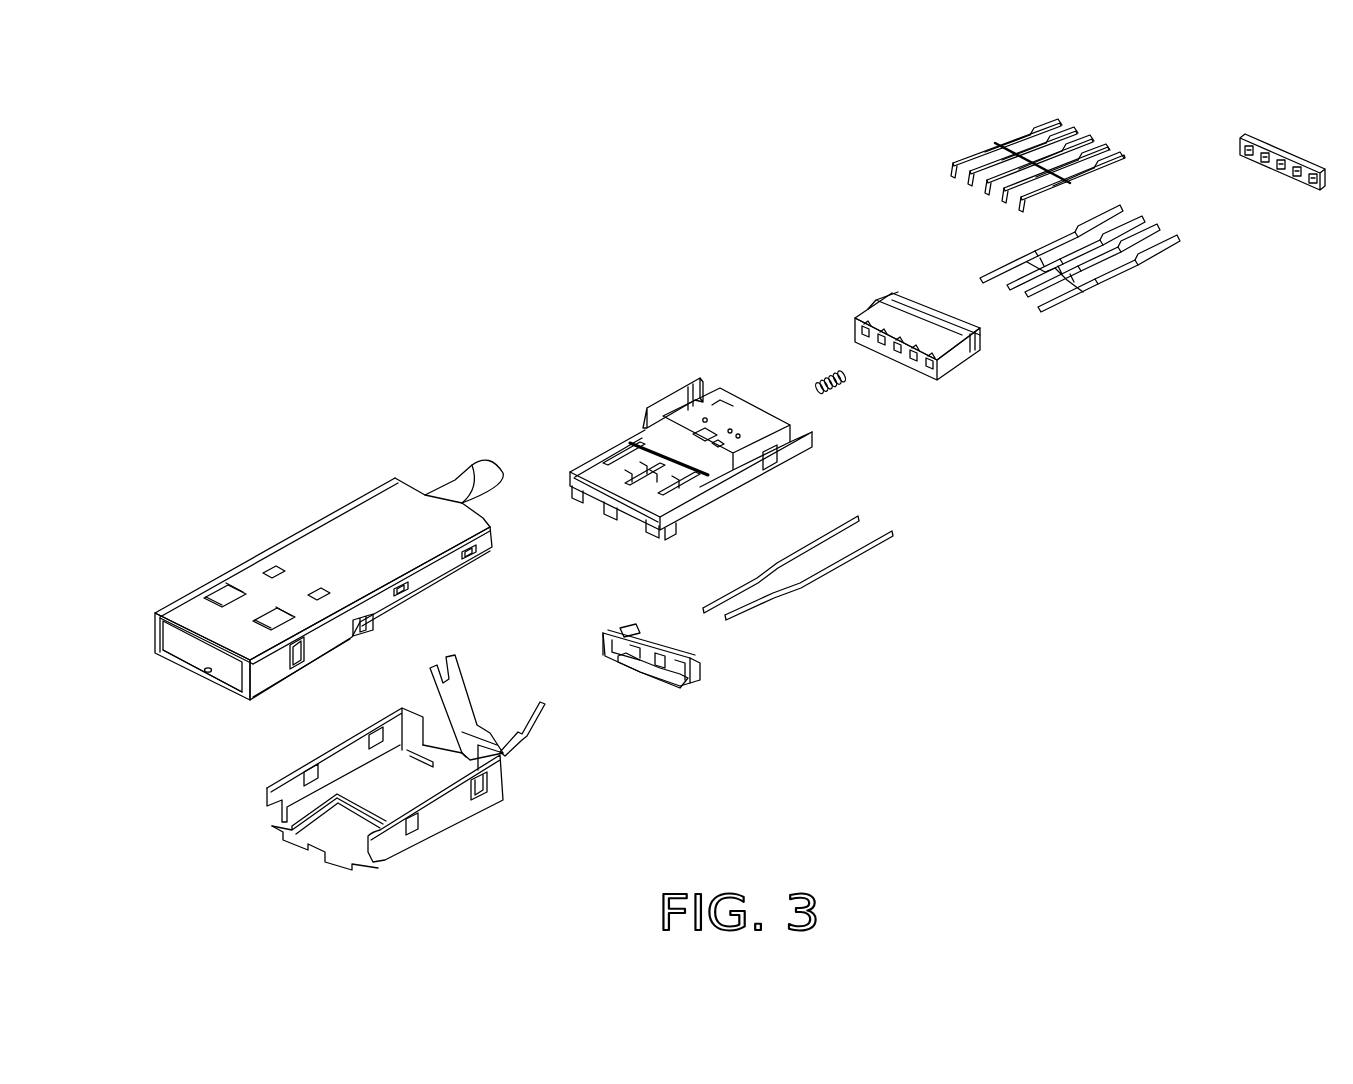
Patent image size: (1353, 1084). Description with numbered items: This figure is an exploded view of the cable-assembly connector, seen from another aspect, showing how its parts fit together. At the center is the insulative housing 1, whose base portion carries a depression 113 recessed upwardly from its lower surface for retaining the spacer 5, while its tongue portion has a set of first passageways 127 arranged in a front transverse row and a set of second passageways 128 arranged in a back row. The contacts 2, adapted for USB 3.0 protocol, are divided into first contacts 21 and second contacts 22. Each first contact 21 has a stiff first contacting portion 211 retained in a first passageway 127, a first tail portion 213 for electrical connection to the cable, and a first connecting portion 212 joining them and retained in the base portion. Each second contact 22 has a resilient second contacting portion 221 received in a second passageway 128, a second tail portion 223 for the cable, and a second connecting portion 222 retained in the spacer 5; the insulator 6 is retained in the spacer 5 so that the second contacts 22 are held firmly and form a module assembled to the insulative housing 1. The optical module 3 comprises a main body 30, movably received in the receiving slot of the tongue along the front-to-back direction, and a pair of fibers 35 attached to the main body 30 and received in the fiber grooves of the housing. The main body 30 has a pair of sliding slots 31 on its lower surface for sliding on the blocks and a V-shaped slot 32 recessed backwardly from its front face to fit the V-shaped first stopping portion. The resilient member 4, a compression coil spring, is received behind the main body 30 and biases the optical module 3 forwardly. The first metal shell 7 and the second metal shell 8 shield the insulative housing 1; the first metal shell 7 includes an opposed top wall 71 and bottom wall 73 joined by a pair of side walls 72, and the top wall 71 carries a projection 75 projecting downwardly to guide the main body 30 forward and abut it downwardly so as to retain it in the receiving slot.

The insulative housing 1 is at (638, 388).
The depression 113 is at (698, 387).
The first passageways 127 is at (692, 487).
The second passageways 128 is at (740, 473).
The contacts 2 is at (1083, 70).
The first contacts 21 is at (1005, 252).
The first contacting portion 211 is at (1058, 295).
The first connecting portion 212 is at (1107, 277).
The first tail portion 213 is at (1167, 247).
The second contacts 22 is at (977, 140).
The second contacting portion 221 is at (958, 160).
The second connecting portion 222 is at (1022, 132).
The second tail portion 223 is at (1045, 118).
The optical module 3 is at (905, 688).
The main body 30 is at (712, 658).
The sliding slots 31 is at (633, 627).
The V-shaped slot 32 is at (633, 662).
The fibers 35 is at (858, 600).
The resilient member 4 is at (812, 368).
The spacer 5 is at (860, 300).
The insulator 6 is at (1236, 130).
The first metal shell 7 is at (240, 530).
The top wall 71 is at (188, 653).
The side walls 72 is at (330, 643).
The bottom wall 73 is at (303, 553).
The projection 75 is at (203, 672).
The second metal shell 8 is at (482, 832).